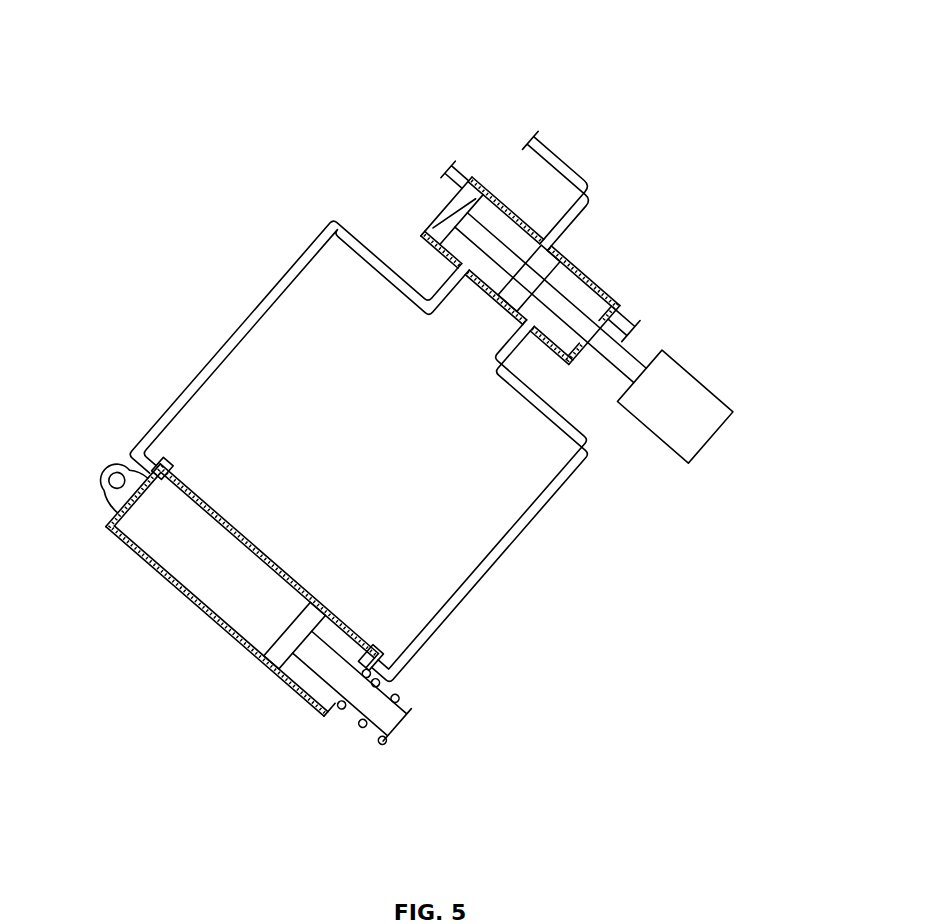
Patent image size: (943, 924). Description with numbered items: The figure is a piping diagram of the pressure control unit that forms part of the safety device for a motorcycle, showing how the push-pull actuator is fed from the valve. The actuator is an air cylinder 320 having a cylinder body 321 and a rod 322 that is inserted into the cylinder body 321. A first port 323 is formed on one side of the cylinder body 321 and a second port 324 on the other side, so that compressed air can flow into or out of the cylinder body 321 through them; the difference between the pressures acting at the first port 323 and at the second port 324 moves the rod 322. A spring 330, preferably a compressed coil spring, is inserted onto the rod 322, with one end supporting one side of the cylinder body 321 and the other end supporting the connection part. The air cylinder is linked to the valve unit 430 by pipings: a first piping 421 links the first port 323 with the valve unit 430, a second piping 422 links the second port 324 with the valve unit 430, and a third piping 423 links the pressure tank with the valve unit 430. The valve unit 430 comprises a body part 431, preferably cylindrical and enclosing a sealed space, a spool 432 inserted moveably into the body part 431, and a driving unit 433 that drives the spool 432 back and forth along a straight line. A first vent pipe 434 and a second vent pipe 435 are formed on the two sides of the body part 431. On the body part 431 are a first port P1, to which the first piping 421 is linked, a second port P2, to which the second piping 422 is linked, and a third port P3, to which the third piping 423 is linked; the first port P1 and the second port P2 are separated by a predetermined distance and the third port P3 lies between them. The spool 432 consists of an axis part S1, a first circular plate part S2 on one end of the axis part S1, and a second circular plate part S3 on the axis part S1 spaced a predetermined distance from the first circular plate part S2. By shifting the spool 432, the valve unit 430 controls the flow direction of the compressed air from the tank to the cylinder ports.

The air cylinder 320 is at (281, 585).
The cylinder body 321 is at (138, 562).
The rod 322 is at (320, 675).
The first port 323 is at (366, 648).
The second port 324 is at (166, 462).
The spring 330 is at (360, 728).
The first piping 421 is at (516, 540).
The second piping 422 is at (232, 330).
The third piping 423 is at (567, 155).
The valve unit 430 is at (580, 239).
The body part 431 is at (582, 258).
The spool 432 is at (493, 213).
The driving unit 433 is at (710, 408).
The first vent pipe 434 is at (628, 322).
The second vent pipe 435 is at (452, 188).
The first port P1 is at (523, 338).
The second port P2 is at (483, 275).
The third port P3 is at (522, 238).
The axis part S1 is at (580, 320).
The first circular plate part S2 is at (430, 215).
The second circular plate part S3 is at (510, 298).